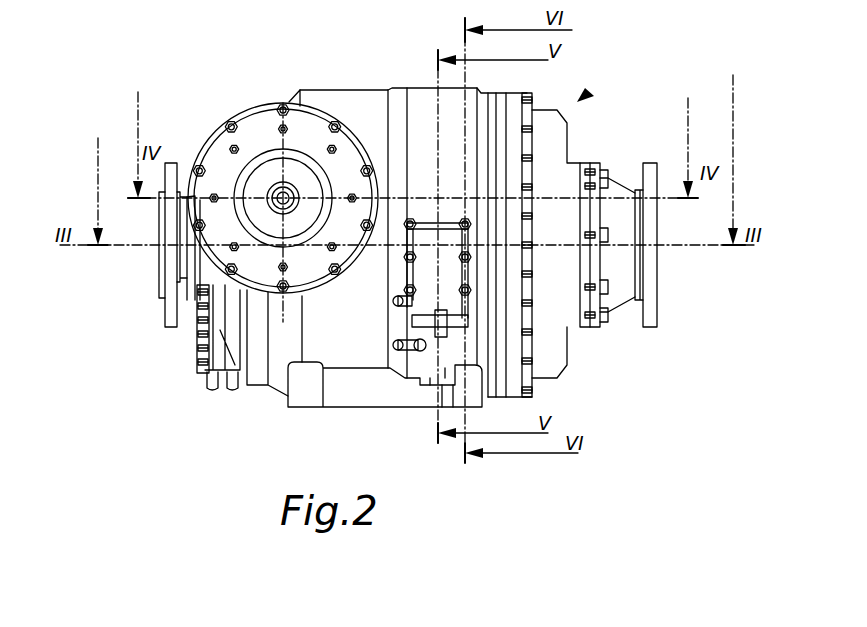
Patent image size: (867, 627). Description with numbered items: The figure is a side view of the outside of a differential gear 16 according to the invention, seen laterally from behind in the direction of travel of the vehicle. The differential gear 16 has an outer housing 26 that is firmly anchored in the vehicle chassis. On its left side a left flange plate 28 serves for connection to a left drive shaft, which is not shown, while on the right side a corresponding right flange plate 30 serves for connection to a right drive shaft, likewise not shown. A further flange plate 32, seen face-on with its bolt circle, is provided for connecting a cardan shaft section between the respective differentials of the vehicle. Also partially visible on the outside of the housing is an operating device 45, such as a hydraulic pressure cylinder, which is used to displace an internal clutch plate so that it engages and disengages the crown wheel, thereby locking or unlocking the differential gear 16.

The differential gear 16 is at (583, 96).
The outer housing 26 is at (366, 108).
The left flange plate 28 is at (165, 302).
The right flange plate 30 is at (650, 310).
The flange plate 32 is at (252, 142).
The operating device 45 is at (225, 360).